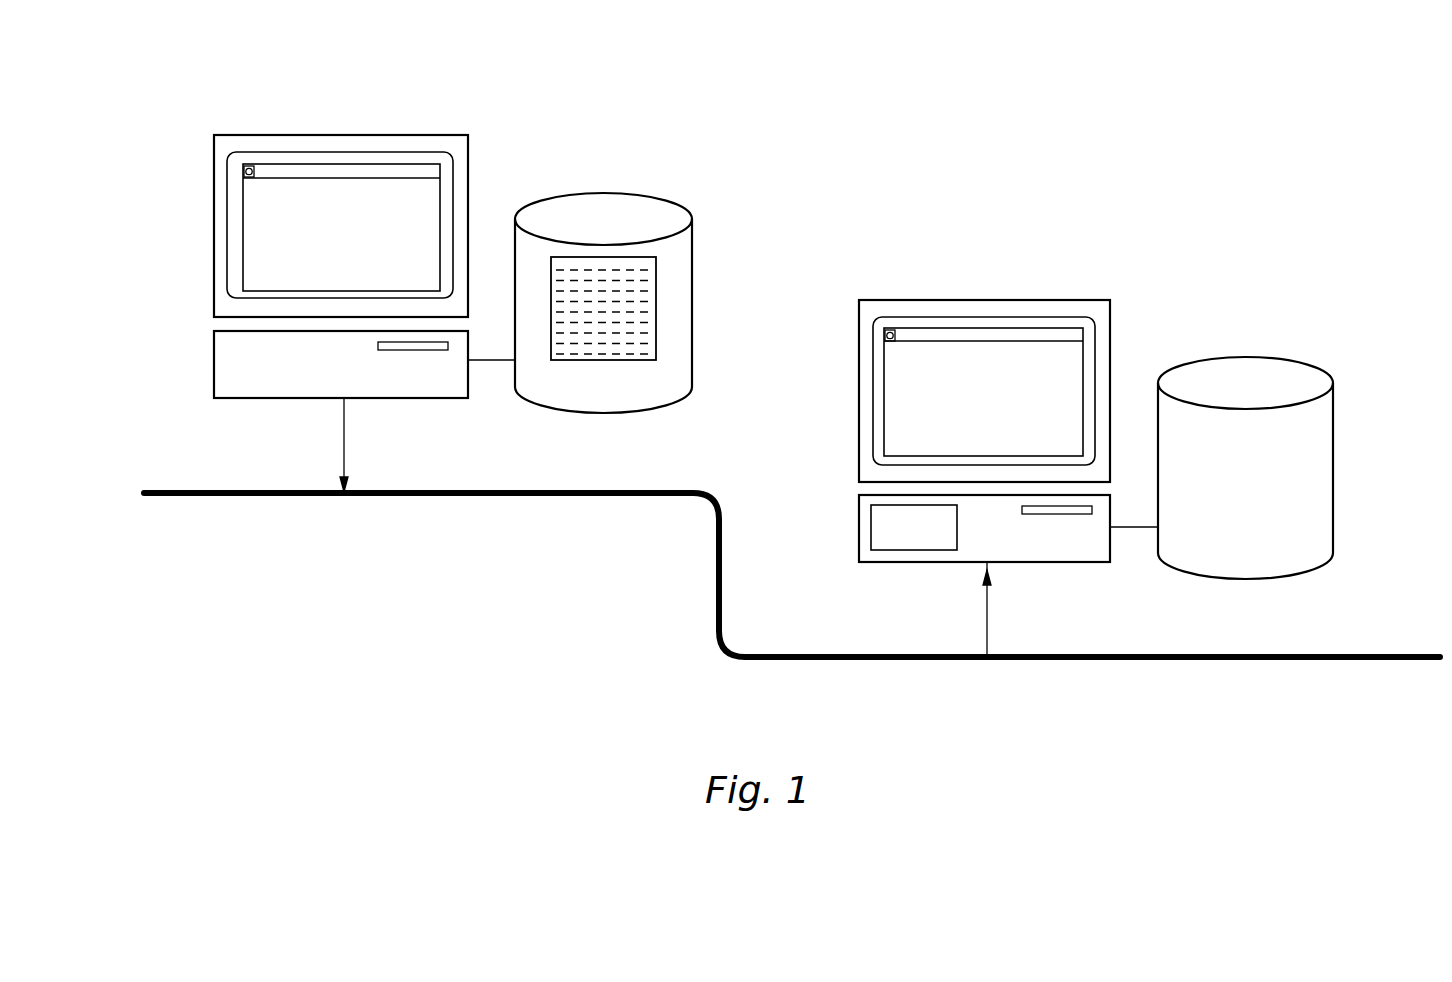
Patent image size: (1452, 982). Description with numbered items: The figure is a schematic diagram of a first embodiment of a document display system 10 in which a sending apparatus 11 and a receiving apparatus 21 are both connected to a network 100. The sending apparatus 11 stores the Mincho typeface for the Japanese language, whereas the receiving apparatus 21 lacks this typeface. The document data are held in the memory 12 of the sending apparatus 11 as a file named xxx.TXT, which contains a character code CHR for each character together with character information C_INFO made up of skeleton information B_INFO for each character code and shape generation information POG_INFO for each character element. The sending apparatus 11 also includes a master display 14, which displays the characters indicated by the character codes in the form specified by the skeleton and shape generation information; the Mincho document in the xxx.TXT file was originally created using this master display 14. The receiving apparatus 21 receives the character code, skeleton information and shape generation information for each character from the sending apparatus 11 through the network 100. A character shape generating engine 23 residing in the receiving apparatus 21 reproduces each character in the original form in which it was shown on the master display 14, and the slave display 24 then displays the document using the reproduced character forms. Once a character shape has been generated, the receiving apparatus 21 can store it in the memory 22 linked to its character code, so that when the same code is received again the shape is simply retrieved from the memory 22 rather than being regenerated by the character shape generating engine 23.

The document display system 10 is at (796, 421).
The sending apparatus 11 is at (217, 106).
The memory 12 is at (692, 285).
The master display 14 is at (398, 170).
The receiving apparatus 21 is at (857, 270).
The memory 22 is at (1333, 447).
The character shape generating engine 23 is at (906, 551).
The slave display 24 is at (1040, 335).
The network 100 is at (716, 607).